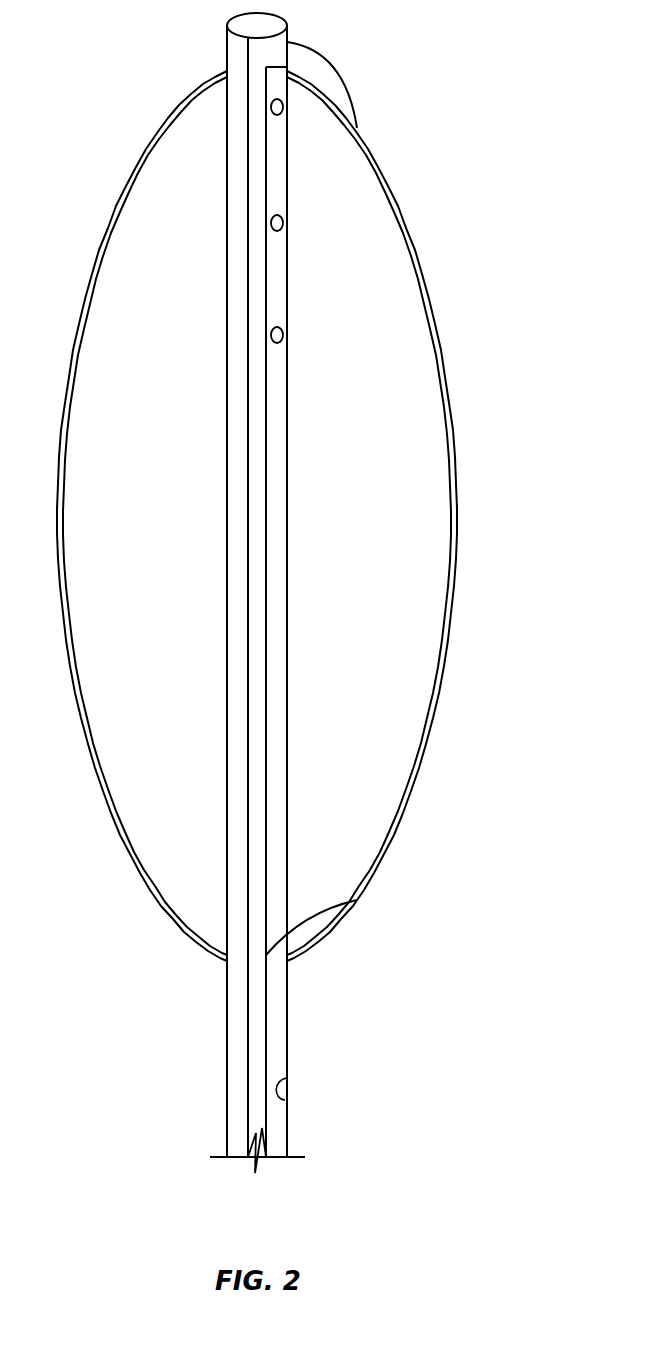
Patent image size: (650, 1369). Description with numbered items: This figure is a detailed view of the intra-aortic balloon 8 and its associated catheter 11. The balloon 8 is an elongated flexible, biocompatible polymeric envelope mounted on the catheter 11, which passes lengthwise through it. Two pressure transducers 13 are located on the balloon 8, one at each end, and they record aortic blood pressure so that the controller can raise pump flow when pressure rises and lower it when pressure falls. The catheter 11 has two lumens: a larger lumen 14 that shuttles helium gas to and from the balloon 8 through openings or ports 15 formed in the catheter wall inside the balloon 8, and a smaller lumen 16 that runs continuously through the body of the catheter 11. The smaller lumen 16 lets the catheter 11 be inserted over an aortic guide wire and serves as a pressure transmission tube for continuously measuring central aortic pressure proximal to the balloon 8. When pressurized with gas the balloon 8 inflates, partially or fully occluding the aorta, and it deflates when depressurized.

The balloon 8 is at (458, 520).
The catheter 11 is at (287, 980).
The pressure transducers 13 is at (347, 90).
The larger lumen 14 is at (285, 1100).
The ports 15 is at (281, 101).
The smaller lumen 16 is at (259, 1168).